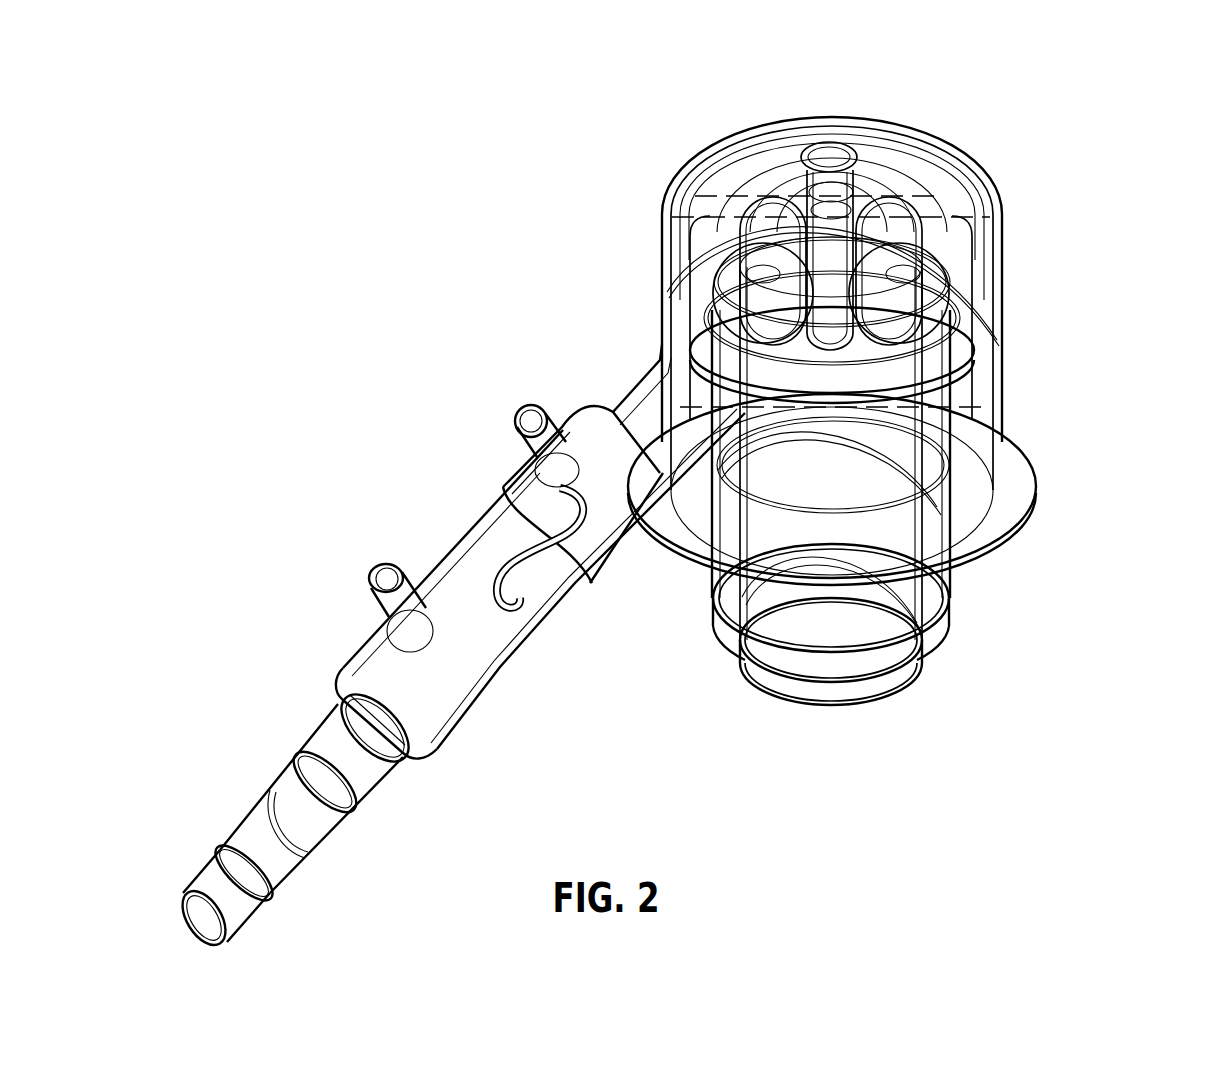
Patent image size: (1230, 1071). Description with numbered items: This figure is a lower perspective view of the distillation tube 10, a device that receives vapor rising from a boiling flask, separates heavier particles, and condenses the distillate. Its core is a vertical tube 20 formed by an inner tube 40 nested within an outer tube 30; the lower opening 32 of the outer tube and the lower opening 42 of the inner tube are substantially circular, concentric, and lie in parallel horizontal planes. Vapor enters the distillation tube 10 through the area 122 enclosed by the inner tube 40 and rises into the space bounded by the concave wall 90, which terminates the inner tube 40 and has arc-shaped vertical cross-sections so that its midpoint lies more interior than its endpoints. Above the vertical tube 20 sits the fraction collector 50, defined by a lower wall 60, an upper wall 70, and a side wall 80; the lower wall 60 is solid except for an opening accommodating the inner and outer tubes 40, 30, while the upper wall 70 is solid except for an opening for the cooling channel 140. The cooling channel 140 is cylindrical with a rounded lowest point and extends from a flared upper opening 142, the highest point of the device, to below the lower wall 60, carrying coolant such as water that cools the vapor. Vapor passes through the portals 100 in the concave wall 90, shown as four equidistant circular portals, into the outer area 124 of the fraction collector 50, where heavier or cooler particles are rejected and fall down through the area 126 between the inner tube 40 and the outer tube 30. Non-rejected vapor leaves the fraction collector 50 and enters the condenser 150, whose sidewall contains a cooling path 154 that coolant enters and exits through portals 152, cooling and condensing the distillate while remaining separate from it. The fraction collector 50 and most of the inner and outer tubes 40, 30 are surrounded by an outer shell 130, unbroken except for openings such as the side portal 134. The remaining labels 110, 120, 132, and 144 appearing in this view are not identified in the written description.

The distillation tube 10 is at (630, 192).
The vertical tube 20 is at (943, 653).
The outer tube 30 is at (950, 565).
The lower opening of the outer tube 32 is at (945, 597).
The inner tube 40 is at (760, 607).
The lower opening of the inner tube 42 is at (743, 667).
The fraction collector 50 is at (962, 215).
The lower wall 60 is at (948, 358).
The upper wall 70 is at (937, 176).
The side wall 80 is at (972, 260).
The concave wall 90 is at (755, 272).
The portal 100 is at (750, 200).
The outlet opening 110 is at (845, 717).
The inner tube 120 is at (858, 665).
The area enclosed by the inner wall 122 is at (777, 520).
The outer area 124 is at (958, 305).
The area between the inner wall and the outer wall 126 is at (760, 567).
The outer shell 130 is at (1002, 385).
The inner ring 132 is at (723, 338).
The side portal 134 is at (995, 505).
The cooling channel 140 is at (855, 172).
The upper opening 142 is at (832, 143).
The central passage 144 is at (830, 330).
The condenser 150 is at (512, 468).
The portals 152 is at (530, 417).
The cooling path 154 is at (490, 518).